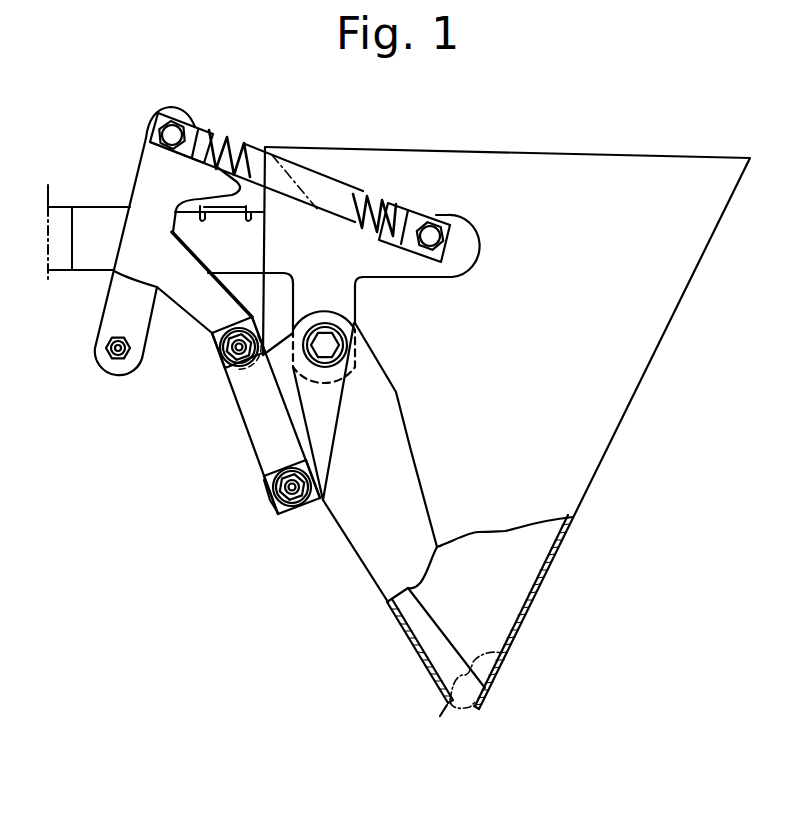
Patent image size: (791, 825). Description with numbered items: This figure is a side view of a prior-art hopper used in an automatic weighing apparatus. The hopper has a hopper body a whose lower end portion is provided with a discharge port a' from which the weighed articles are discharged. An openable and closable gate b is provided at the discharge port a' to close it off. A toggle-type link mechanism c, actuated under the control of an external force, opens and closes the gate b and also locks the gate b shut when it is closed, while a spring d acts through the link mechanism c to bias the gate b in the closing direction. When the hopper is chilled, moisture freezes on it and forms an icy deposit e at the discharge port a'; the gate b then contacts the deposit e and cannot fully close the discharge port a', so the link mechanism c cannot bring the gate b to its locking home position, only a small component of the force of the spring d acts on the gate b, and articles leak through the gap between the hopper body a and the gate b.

The hopper body a is at (506, 428).
The discharge port a' is at (415, 658).
The gate b is at (390, 607).
The toggle-type link mechanism c is at (223, 398).
The spring d is at (380, 217).
The icy deposit e is at (463, 707).